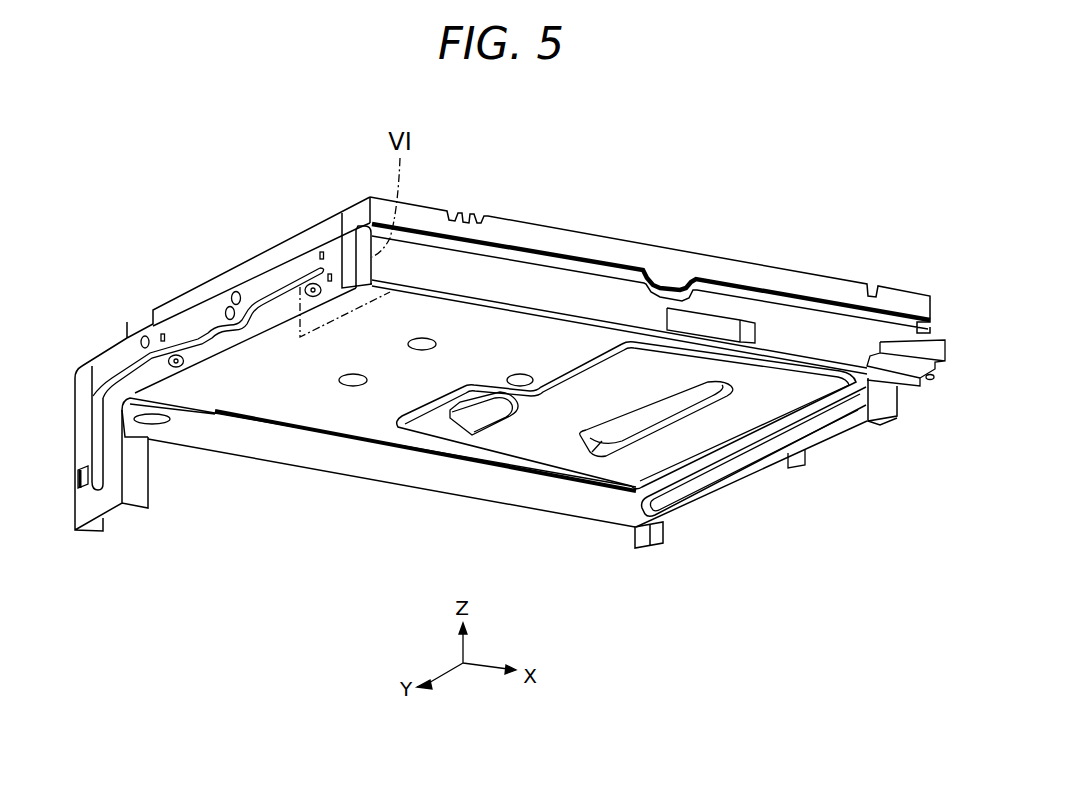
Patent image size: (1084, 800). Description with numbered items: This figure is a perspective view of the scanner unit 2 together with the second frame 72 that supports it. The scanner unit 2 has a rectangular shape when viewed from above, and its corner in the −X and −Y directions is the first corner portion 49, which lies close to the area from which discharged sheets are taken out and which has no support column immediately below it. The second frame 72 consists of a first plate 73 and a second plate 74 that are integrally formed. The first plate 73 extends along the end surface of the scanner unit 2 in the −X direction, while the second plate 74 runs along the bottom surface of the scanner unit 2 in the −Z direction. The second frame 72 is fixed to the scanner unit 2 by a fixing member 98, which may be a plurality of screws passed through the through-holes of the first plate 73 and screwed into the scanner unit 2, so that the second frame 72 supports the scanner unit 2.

The scanner unit 2 is at (650, 250).
The first corner portion 49 is at (303, 205).
The second frame 72 is at (90, 357).
The first plate 73 is at (215, 312).
The second plate 74 is at (322, 330).
The fixing member 98 is at (160, 336).